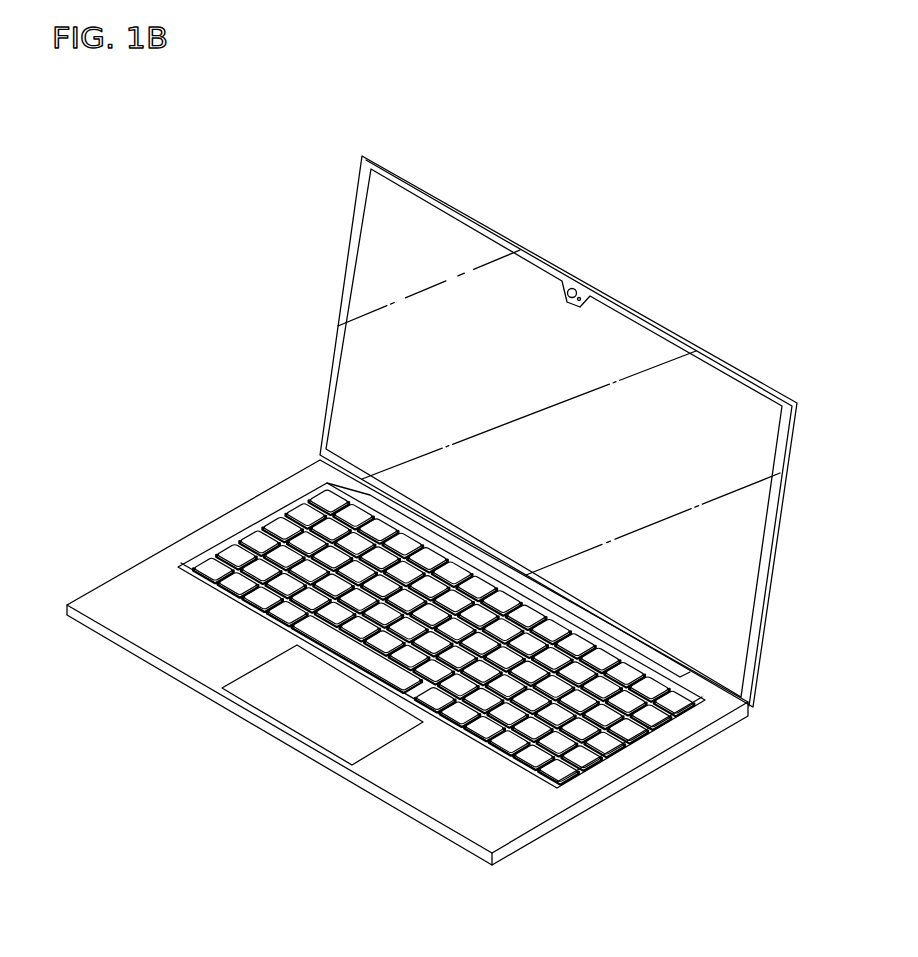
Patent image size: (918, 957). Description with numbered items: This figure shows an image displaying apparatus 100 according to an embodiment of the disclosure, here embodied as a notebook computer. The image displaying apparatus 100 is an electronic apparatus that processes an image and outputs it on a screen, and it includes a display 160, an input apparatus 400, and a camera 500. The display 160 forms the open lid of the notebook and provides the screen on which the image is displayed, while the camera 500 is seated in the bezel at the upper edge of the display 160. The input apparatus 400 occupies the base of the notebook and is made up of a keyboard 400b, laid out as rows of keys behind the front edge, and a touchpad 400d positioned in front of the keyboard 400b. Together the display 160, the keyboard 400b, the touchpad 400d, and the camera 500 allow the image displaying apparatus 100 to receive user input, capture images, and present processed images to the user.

The image displaying apparatus 100 is at (168, 181).
The display 160 is at (726, 395).
The camera 500 is at (570, 288).
The input apparatus 400 is at (430, 897).
The keyboard 400b is at (508, 742).
The touchpad 400d is at (368, 728).